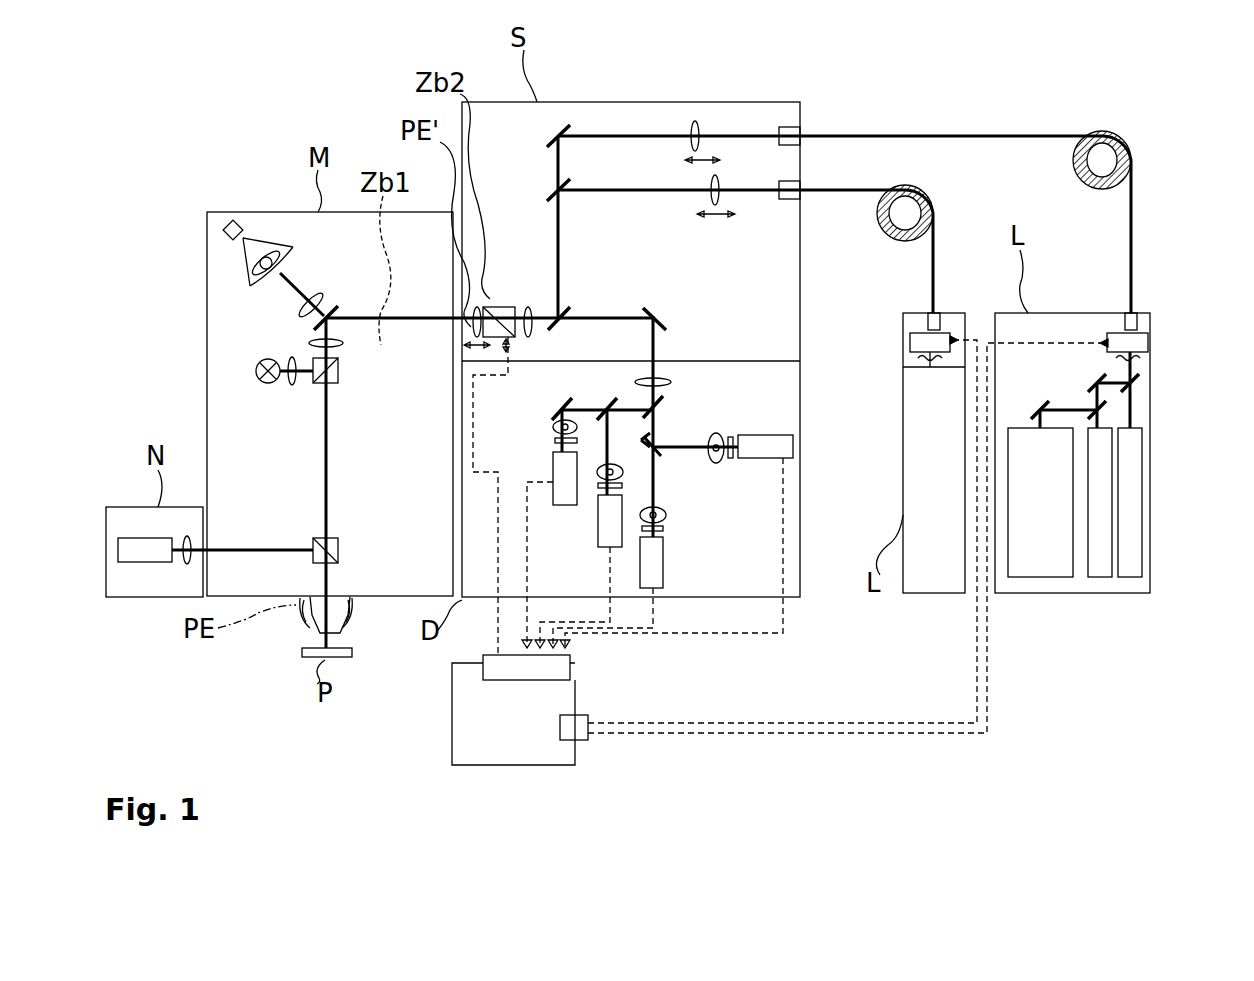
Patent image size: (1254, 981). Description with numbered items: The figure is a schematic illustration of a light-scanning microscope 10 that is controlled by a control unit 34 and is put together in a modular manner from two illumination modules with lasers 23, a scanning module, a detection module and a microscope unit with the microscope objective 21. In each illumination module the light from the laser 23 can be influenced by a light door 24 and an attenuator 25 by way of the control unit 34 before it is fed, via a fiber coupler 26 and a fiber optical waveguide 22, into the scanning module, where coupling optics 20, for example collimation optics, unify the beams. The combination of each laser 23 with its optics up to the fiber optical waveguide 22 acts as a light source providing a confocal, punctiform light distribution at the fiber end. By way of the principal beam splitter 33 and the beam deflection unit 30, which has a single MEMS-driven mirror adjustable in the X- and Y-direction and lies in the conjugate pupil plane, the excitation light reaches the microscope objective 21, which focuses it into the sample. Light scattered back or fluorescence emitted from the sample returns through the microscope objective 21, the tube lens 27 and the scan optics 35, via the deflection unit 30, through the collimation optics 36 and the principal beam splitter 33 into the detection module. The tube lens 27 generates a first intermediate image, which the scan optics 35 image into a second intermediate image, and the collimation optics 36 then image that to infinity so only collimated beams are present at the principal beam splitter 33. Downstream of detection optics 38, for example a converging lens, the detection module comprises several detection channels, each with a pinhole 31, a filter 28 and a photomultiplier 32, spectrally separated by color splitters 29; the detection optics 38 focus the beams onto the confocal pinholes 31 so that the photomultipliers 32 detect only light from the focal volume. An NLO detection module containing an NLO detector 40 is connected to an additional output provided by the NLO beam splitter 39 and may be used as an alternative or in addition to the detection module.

The light-scanning microscope 10 is at (213, 113).
The coupling optics 20 is at (717, 175).
The microscope objective 21 is at (302, 612).
The fiber optical waveguide 22 is at (849, 187).
The laser 23 is at (1135, 445).
The light door 24 is at (920, 357).
The attenuator 25 is at (910, 340).
The fiber coupler 26 is at (788, 127).
The tube lens 27 is at (309, 343).
The filter 28 is at (598, 483).
The color splitter 29 is at (650, 434).
The beam deflection unit 30 is at (500, 306).
The pinhole 31 is at (604, 464).
The photomultiplier 32 is at (564, 505).
The principal beam splitter 33 is at (569, 310).
The control unit 34 is at (535, 736).
The scan optics 35 is at (471, 330).
The collimation optics 36 is at (533, 304).
The detection optics 38 is at (672, 382).
The NLO beam splitter 39 is at (338, 550).
The NLO detector 40 is at (138, 562).